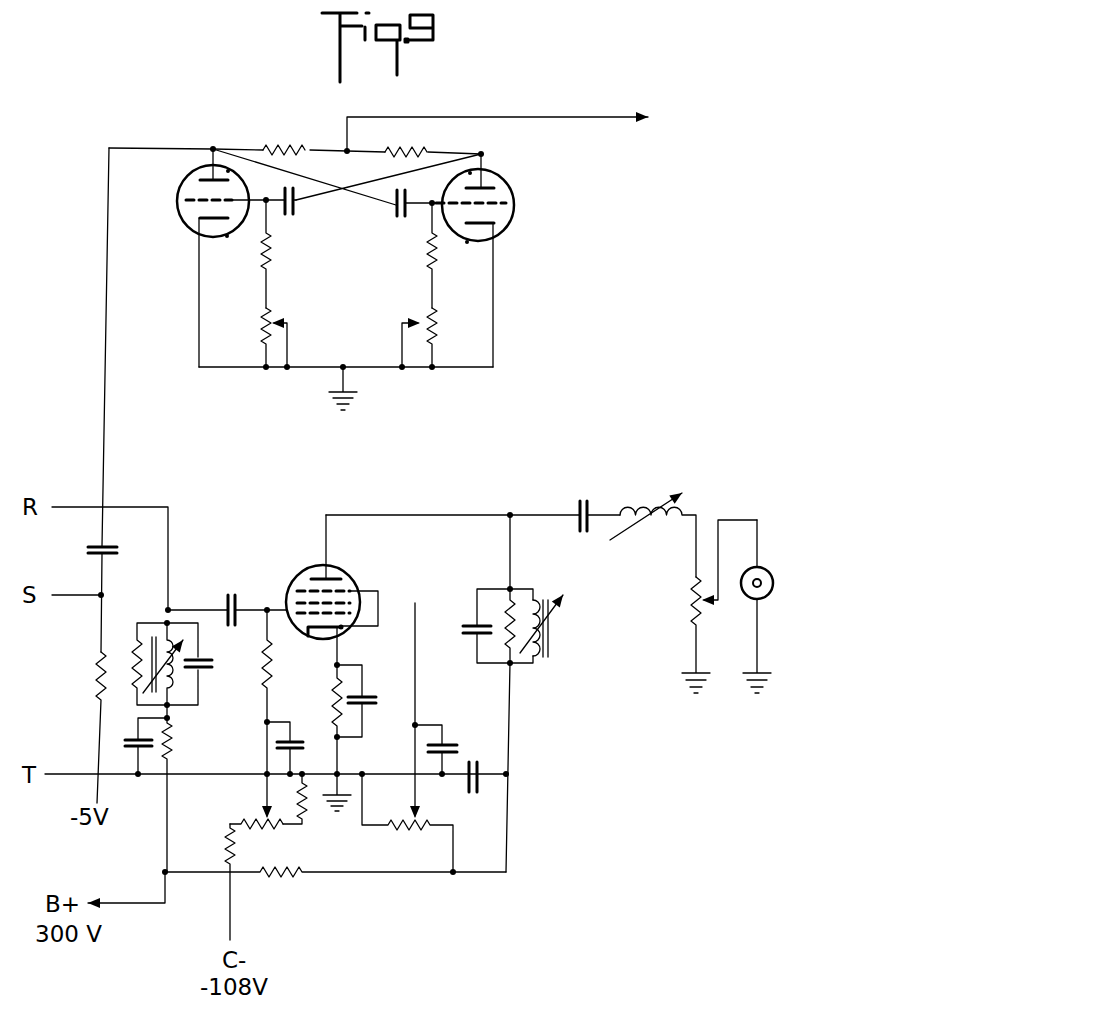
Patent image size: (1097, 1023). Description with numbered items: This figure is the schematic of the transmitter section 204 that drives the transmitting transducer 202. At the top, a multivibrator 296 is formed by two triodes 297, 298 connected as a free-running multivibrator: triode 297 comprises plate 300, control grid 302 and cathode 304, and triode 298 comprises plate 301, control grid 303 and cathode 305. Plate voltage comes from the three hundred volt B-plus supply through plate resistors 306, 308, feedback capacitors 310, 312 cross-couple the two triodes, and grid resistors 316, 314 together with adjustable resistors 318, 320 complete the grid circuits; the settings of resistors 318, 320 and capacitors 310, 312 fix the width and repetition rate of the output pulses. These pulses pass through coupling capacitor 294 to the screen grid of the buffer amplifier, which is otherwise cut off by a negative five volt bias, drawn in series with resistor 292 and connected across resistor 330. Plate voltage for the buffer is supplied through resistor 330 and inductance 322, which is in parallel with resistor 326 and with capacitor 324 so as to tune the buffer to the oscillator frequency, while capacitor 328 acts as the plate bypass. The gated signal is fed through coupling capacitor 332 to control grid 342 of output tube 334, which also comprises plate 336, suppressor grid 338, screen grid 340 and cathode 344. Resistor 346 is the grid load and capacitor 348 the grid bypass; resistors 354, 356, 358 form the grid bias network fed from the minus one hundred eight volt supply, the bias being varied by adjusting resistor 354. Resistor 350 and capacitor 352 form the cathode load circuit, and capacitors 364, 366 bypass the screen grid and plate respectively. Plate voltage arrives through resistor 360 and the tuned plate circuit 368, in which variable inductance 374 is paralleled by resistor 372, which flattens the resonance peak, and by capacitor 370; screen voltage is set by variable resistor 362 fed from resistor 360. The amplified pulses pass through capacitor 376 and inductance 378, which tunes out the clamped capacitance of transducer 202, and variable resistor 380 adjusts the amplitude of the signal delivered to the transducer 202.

The multivibrator circuit 204 is at (449, 443).
The multivibrator 296 is at (366, 228).
The plate 300 is at (202, 238).
The plate 301 is at (493, 252).
The triode 297 is at (180, 188).
The triode 298 is at (512, 200).
The control grid 302 is at (188, 204).
The control grid 303 is at (508, 207).
The cathode 304 is at (205, 232).
The cathode 305 is at (495, 236).
The plate resistor 306 is at (285, 148).
The plate resistor 308 is at (410, 152).
The feedback capacitor 310 is at (289, 222).
The feedback capacitor 312 is at (399, 222).
The grid resistor 314 is at (437, 262).
The grid resistor 316 is at (262, 258).
The adjustable resistor 318 is at (260, 322).
The adjustable resistor 320 is at (437, 330).
The resistor 292 is at (98, 680).
The coupling capacitor 294 is at (88, 550).
The inductance 322 is at (172, 692).
The capacitor 324 is at (225, 658).
The resistor 326 is at (185, 657).
The bypass capacitor 328 is at (125, 742).
The resistor 330 is at (172, 746).
The coupling capacitor 332 is at (231, 594).
The output tube 334 is at (322, 590).
The plate 336 is at (312, 578).
The suppressor grid 338 is at (338, 588).
The screen grid 340 is at (300, 601).
The control grid 342 is at (308, 636).
The cathode 344 is at (340, 652).
The grid load resistor 346 is at (262, 676).
The grid by-pass capacitor 348 is at (278, 745).
The resistor 350 is at (332, 706).
The capacitor 352 is at (392, 690).
The resistor 354 is at (270, 828).
The resistor 356 is at (305, 812).
The resistor 358 is at (228, 848).
The resistor 360 is at (286, 880).
The variable resistor 362 is at (394, 832).
The screen grid by-pass capacitor 364 is at (455, 750).
The plate by-pass capacitor 366 is at (478, 790).
The tank circuit 368 is at (514, 624).
The capacitor 370 is at (467, 636).
The resistor 372 is at (505, 660).
The variable inductance 374 is at (549, 630).
The capacitor 376 is at (580, 498).
The inductance 378 is at (640, 508).
The variable resistor 380 is at (690, 612).
The transducer 202 is at (775, 606).